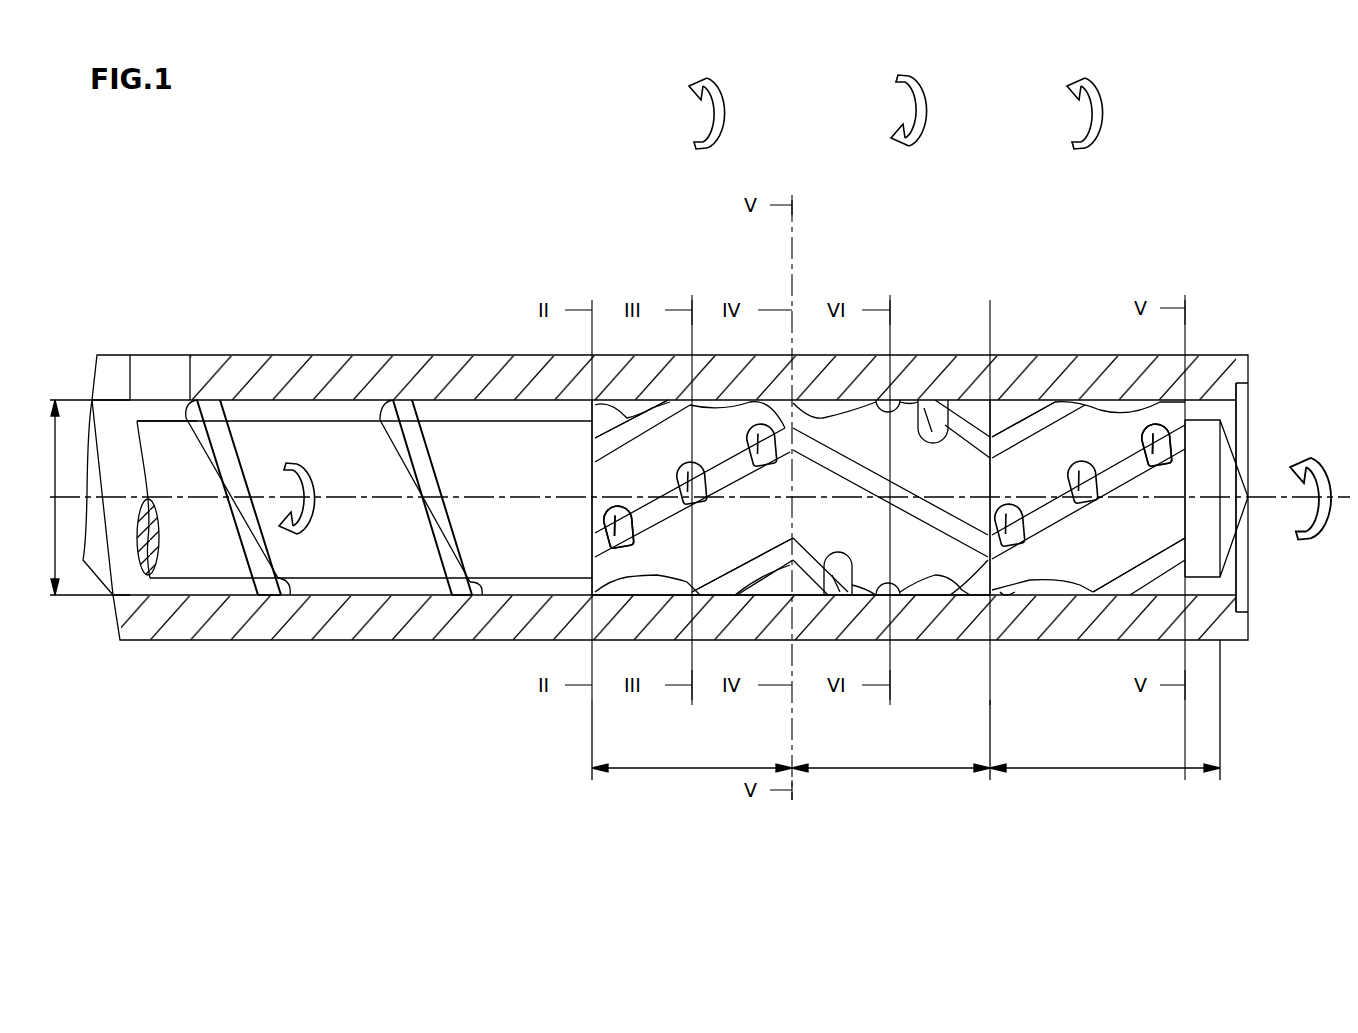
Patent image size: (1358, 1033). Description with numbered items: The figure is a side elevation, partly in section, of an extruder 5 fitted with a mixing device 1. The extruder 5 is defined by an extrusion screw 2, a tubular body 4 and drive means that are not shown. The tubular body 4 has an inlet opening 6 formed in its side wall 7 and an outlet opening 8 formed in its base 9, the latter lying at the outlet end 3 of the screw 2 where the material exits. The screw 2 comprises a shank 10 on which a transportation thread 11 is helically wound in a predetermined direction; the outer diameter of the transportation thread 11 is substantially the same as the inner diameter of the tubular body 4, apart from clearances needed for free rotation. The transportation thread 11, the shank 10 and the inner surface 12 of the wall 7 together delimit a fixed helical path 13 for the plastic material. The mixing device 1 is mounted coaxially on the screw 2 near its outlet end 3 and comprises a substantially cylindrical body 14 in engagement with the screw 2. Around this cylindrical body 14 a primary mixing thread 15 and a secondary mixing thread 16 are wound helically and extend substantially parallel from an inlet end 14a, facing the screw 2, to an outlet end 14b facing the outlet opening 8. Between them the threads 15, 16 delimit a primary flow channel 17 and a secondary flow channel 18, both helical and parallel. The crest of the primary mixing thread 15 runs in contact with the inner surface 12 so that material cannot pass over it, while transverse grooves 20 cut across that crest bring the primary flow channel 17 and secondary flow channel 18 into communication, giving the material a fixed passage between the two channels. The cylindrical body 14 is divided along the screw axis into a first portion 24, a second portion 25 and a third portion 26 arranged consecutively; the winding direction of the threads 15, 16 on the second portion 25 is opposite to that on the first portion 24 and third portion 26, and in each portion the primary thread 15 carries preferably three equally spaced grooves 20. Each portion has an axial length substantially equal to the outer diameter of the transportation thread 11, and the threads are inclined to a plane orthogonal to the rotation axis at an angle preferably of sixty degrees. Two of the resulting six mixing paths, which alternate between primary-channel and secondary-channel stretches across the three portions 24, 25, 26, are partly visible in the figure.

The mixing device 1 is at (1120, 405).
The extrusion screw 2 is at (408, 597).
The outlet end 3 is at (1198, 452).
The tubular body 4 is at (372, 340).
The extruder 5 is at (537, 235).
The inlet opening 6 is at (158, 378).
The side wall 7 is at (442, 400).
The outlet opening 8 is at (1240, 462).
The base 9 is at (1252, 632).
The shank 10 is at (374, 548).
The transportation thread 11 is at (488, 560).
The inner surface 12 is at (310, 400).
The helical path 13 is at (484, 398).
The cylindrical body 14 is at (630, 598).
The inlet end 14a is at (562, 478).
The outlet end 14b is at (1243, 453).
The primary mixing thread 15 is at (983, 428).
The secondary mixing thread 16 is at (604, 518).
The primary flow channel 17 is at (632, 494).
The secondary flow channel 18 is at (725, 530).
The grooves 20 is at (750, 428).
The first portion 24 is at (677, 245).
The second portion 25 is at (905, 225).
The third portion 26 is at (1105, 270).